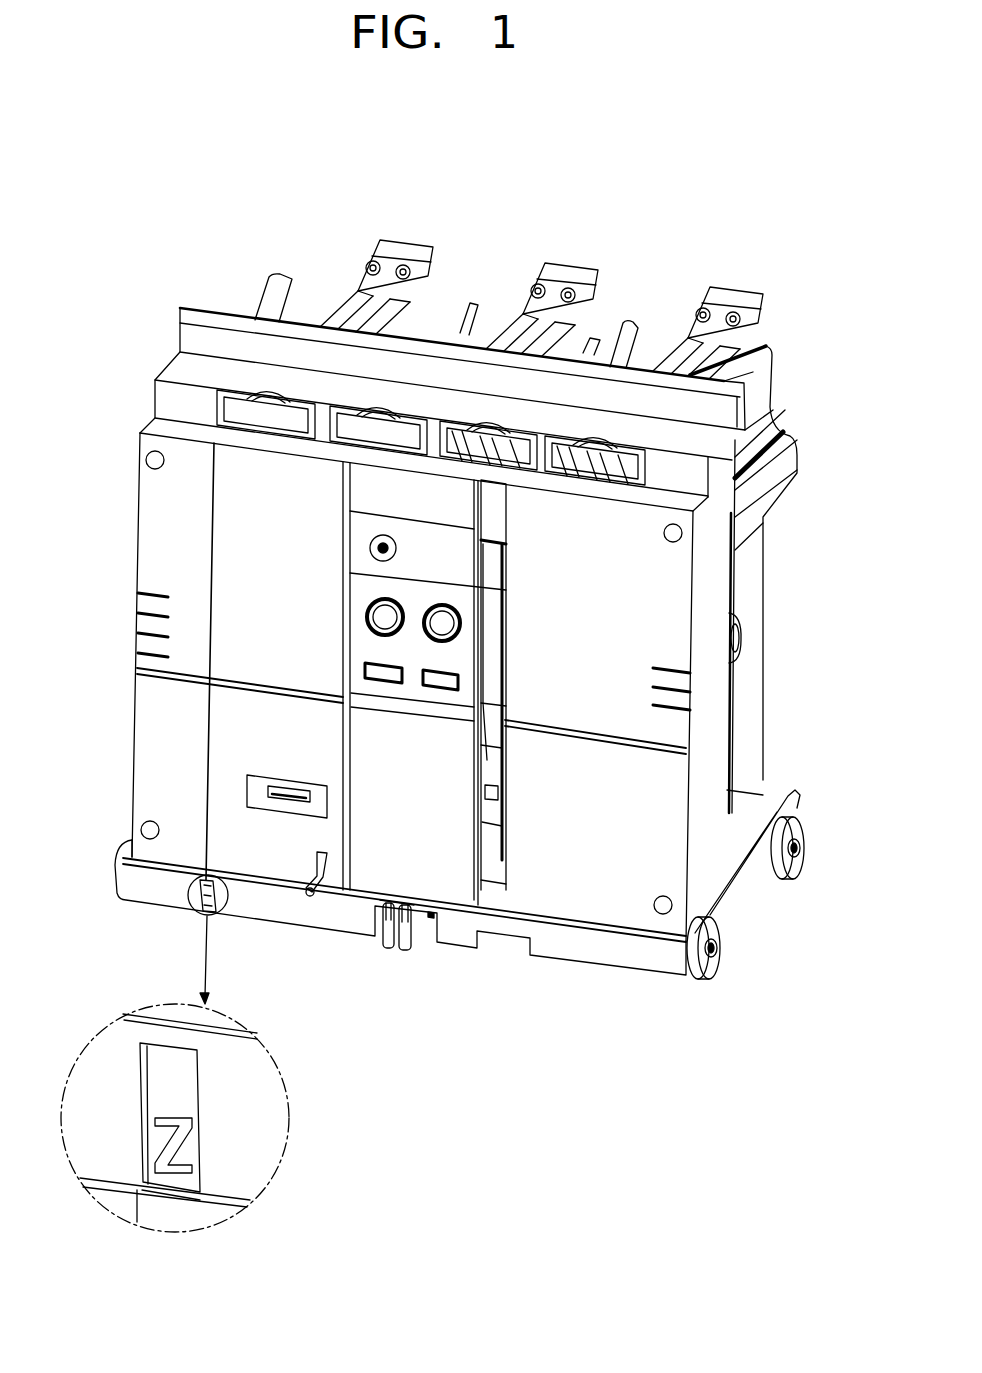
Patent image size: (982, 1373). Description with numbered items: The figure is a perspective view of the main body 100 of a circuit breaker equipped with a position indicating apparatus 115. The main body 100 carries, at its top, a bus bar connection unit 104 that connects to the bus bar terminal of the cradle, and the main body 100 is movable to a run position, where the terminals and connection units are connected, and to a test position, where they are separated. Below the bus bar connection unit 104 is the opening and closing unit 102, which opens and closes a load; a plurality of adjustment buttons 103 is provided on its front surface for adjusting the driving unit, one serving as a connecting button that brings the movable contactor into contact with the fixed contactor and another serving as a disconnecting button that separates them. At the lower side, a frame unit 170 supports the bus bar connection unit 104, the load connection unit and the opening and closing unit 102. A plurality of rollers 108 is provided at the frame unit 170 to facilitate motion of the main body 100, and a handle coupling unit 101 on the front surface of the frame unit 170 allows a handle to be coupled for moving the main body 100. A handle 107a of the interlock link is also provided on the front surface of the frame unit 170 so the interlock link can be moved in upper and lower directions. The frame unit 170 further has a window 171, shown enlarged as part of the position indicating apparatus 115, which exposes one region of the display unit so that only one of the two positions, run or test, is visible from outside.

The main body 100 is at (133, 283).
The handle coupling unit 101 is at (413, 930).
The opening and closing unit 102 is at (365, 728).
The adjustment buttons 103 is at (427, 612).
The bus bar connection unit 104 is at (410, 259).
The handle of the interlock link 107a is at (308, 893).
The rollers 108 is at (723, 955).
The position indicating apparatus 115 is at (188, 1238).
The frame unit 170 is at (598, 948).
The window 171 is at (197, 1158).